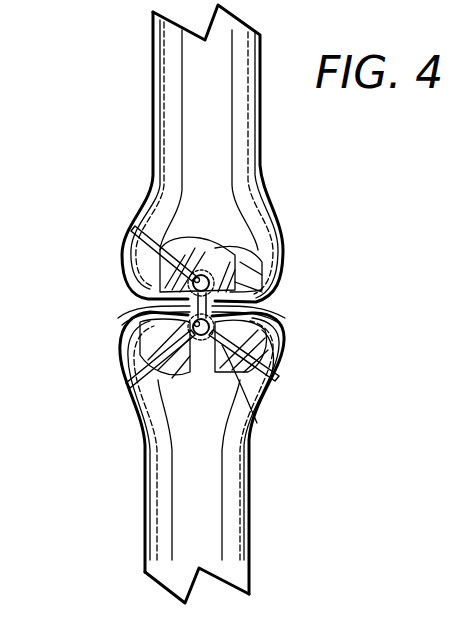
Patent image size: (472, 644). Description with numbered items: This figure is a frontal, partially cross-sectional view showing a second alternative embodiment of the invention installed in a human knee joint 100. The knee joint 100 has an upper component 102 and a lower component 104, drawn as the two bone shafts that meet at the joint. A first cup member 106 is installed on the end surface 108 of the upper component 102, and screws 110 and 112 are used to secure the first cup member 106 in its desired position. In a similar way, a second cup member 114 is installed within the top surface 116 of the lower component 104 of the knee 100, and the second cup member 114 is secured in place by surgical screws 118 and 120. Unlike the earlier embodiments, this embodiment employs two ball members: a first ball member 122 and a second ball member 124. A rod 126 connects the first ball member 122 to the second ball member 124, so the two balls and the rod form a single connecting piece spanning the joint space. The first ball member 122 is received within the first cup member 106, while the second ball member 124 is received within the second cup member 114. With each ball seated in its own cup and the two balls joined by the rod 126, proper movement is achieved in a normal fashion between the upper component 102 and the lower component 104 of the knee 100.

The knee joint 100 is at (270, 200).
The upper component 102 is at (284, 283).
The lower component 104 is at (270, 382).
The first cup member 106 is at (180, 247).
The end surface 108 is at (130, 292).
The screw 110 is at (133, 248).
The screw 112 is at (282, 252).
The second cup member 114 is at (257, 423).
The top surface 116 is at (282, 322).
The surgical screw 118 is at (282, 358).
The surgical screw 120 is at (130, 383).
The first ball member 122 is at (222, 268).
The second ball member 124 is at (198, 340).
The rod 126 is at (133, 307).